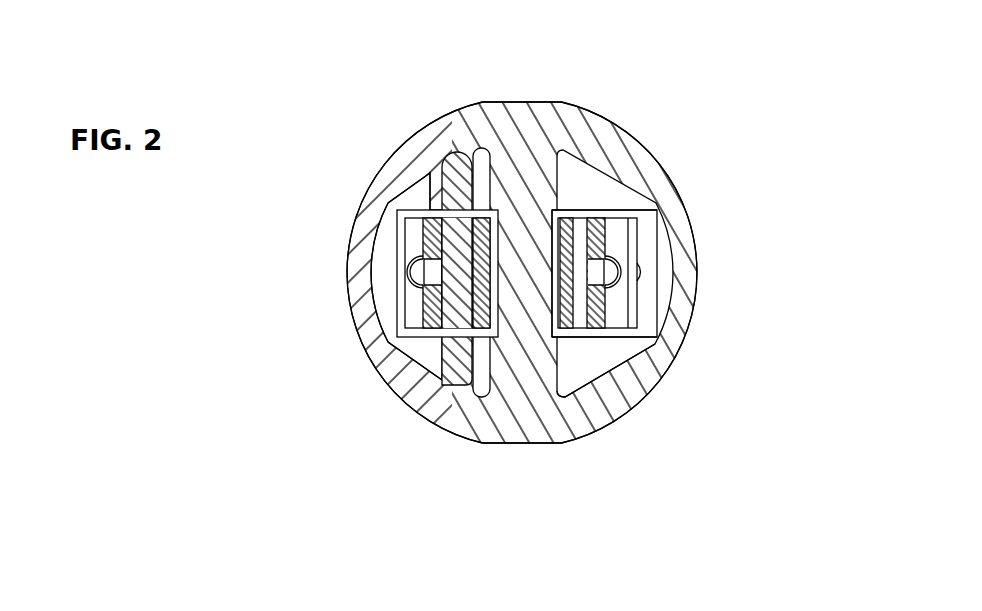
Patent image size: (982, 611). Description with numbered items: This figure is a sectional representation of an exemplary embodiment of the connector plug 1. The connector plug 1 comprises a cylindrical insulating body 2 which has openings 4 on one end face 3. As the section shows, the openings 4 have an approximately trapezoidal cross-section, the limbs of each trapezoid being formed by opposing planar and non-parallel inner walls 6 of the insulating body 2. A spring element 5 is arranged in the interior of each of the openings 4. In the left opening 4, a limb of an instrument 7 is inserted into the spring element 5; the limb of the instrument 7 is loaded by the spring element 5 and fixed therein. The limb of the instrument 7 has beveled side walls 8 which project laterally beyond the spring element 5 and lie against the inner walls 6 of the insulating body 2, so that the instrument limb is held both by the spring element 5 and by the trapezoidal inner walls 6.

The connector plug 1 is at (716, 135).
The insulating body 2 is at (573, 106).
The end face 3 is at (690, 258).
The openings 4 is at (597, 368).
The spring element 5 is at (593, 345).
The inner walls 6 is at (578, 392).
The instrument 7 is at (463, 386).
The beveled side walls 8 is at (452, 164).